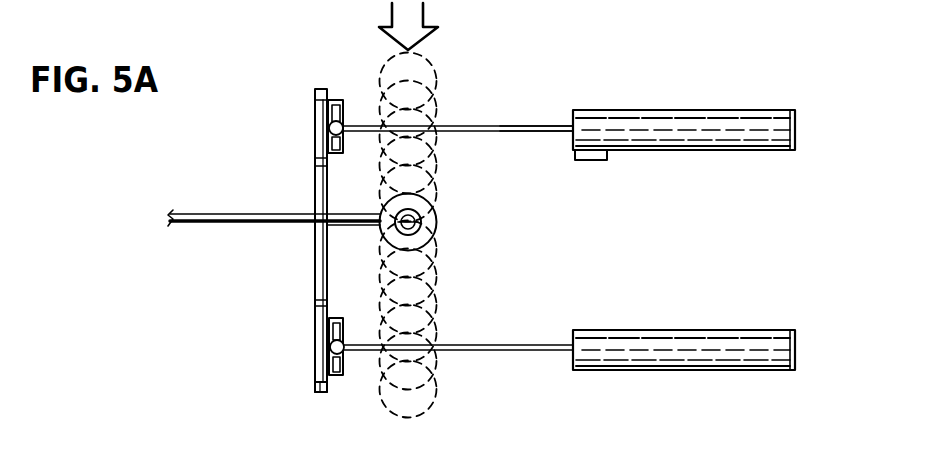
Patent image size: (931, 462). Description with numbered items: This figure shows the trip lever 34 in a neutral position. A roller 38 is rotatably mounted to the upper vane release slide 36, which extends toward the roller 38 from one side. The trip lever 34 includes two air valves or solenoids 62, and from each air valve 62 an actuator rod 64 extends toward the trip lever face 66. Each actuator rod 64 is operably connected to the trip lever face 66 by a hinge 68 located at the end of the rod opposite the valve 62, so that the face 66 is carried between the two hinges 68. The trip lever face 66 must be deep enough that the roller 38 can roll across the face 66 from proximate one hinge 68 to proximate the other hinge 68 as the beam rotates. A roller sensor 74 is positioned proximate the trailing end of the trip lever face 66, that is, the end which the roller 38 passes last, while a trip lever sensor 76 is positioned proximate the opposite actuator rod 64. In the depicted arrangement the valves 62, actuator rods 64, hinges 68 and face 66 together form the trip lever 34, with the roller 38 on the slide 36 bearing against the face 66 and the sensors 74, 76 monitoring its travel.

The trip lever 34 is at (492, 125).
The upper vane release slide 36 is at (203, 227).
The roller 38 is at (437, 222).
The air valve 62 is at (642, 118).
The actuator rod 64 is at (548, 132).
The trip lever face 66 is at (317, 292).
The hinge 68 is at (337, 100).
The roller sensor 74 is at (317, 395).
The trip lever sensor 76 is at (600, 160).